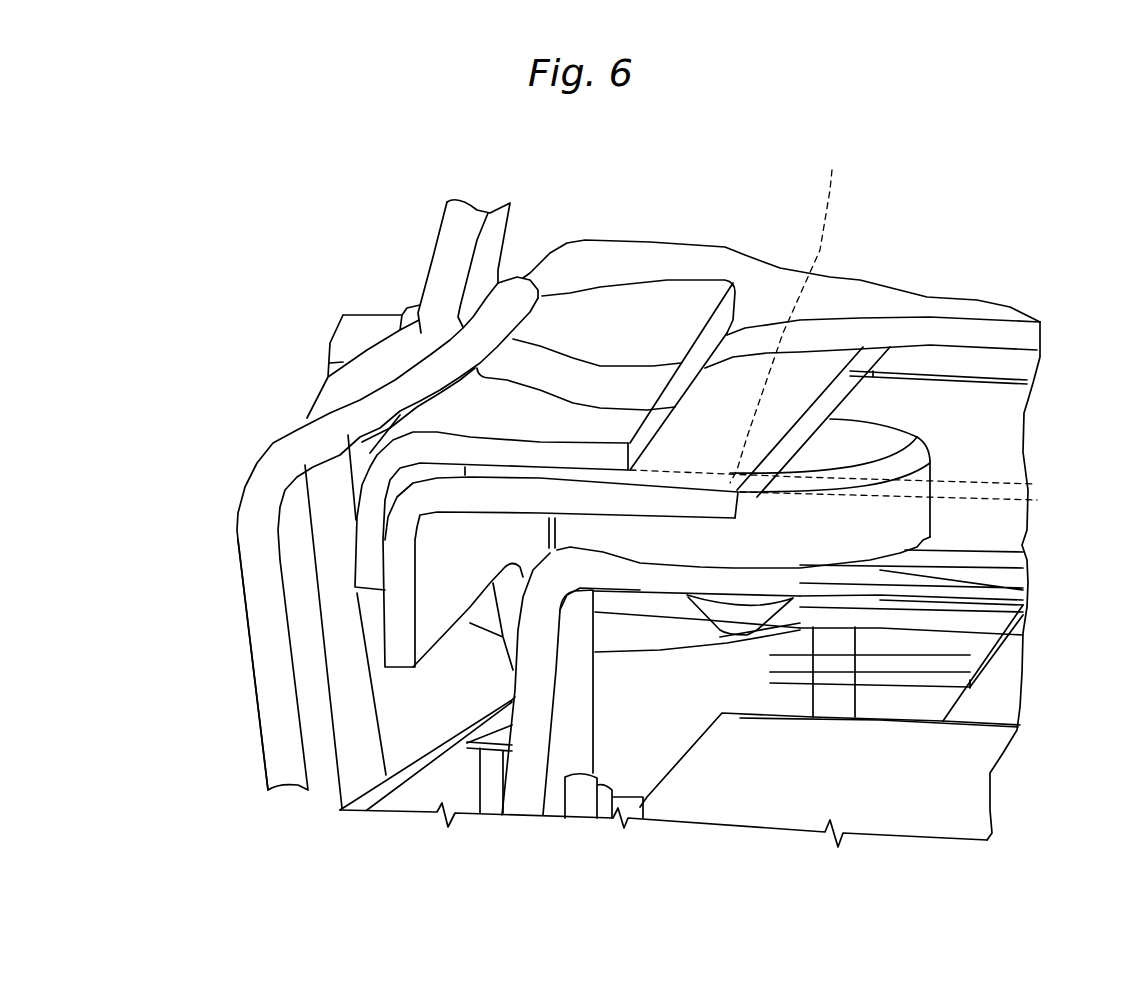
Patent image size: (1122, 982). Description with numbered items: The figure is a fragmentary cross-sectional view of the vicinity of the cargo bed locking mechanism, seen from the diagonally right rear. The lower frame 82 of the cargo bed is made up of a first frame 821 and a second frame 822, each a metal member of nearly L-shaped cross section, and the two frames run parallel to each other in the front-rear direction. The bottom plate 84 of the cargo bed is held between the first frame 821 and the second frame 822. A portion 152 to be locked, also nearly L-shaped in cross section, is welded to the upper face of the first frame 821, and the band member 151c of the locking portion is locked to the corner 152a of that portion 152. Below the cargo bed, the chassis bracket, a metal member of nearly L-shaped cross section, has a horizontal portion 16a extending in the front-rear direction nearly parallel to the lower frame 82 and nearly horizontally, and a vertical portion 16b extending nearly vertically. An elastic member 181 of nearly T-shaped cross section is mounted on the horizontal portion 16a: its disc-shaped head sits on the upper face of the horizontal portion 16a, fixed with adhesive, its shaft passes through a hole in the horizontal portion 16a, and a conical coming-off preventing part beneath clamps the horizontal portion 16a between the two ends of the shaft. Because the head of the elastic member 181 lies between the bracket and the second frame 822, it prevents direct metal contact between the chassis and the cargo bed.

The horizontal portion 16a is at (1033, 588).
The vertical portion 16b is at (583, 733).
The lower frame 82 is at (762, 133).
The first frame 821 is at (543, 417).
The second frame 822 is at (672, 503).
The bottom plate 84 is at (790, 311).
The elastic member 181 is at (933, 445).
The portion to be locked 152 is at (443, 235).
The corner 152a is at (503, 270).
The band member 151c is at (253, 603).